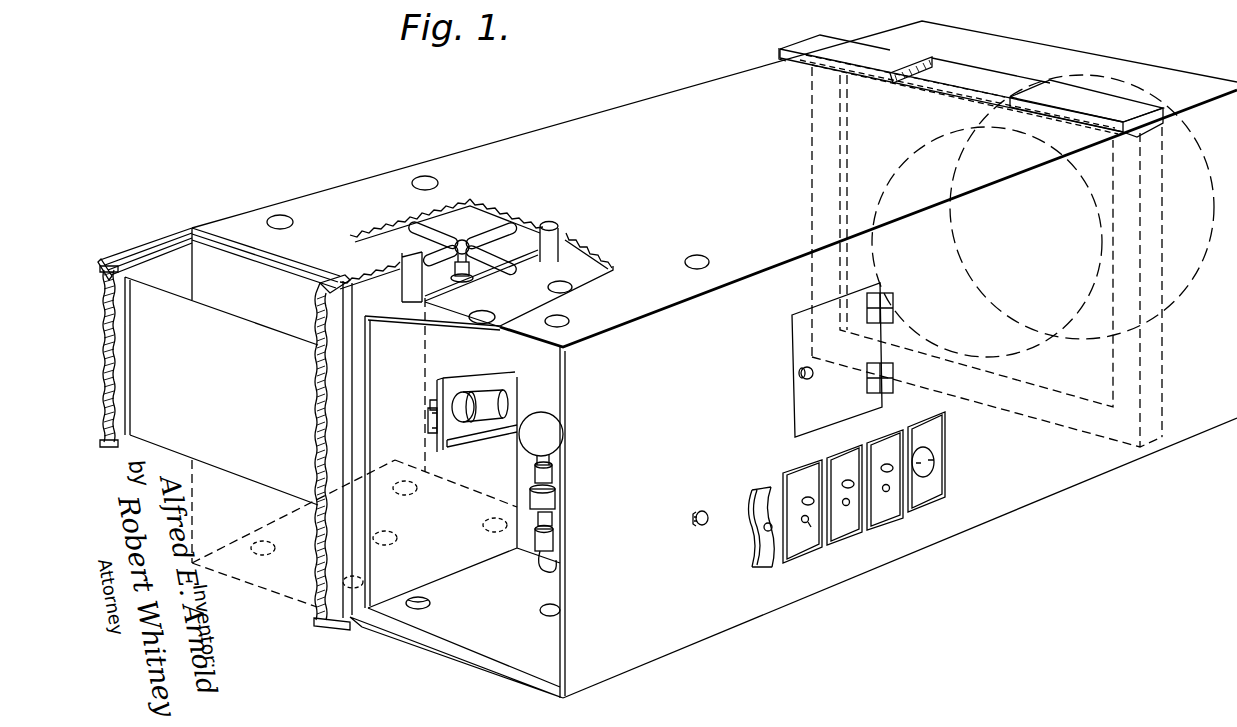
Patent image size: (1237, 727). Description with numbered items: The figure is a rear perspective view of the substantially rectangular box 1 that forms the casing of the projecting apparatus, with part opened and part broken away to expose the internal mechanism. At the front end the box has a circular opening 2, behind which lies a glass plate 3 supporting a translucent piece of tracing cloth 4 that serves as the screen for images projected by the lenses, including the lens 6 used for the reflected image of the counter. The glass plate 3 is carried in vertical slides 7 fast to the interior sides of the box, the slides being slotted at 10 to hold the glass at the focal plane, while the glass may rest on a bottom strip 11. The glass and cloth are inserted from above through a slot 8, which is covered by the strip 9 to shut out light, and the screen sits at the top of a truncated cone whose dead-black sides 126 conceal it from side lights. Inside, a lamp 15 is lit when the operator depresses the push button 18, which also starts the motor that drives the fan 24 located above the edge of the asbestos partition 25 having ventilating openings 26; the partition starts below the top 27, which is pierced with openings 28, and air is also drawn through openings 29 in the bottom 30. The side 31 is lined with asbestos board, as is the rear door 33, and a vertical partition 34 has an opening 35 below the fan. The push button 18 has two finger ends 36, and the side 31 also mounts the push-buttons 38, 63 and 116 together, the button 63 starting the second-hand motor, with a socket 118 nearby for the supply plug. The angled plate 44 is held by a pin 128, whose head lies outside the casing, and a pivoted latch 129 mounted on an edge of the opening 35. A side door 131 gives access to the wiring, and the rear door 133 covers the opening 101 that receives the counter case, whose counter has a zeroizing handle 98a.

The box 1 is at (1152, 70).
The circular opening 2 is at (1193, 206).
The glass plate 3 is at (973, 105).
The tracing cloth 4 is at (897, 75).
The lens 6 is at (478, 398).
The slides 7 is at (812, 173).
The slot 8 is at (940, 82).
The strip 9 is at (1058, 92).
The slot 10 is at (830, 68).
The bottom strip 11 is at (1015, 403).
The lamp 15 is at (520, 451).
The push button 18 is at (833, 474).
The fan 24 is at (428, 230).
The partition 25 is at (507, 288).
The ventilating openings 26 is at (469, 317).
The top 27 is at (714, 124).
The openings 28 is at (710, 255).
The openings 29 is at (393, 543).
The bottom 30 is at (450, 655).
The side 31 is at (743, 616).
The rear door 33 is at (316, 418).
The vertical partition 34 is at (384, 462).
The opening 35 is at (458, 378).
The finger ends 36 is at (847, 491).
The push button 38 is at (813, 504).
The plate 44 is at (533, 548).
The push button 63 is at (766, 530).
The zeroizing handle 98a is at (432, 430).
The opening 101 is at (205, 322).
The push button 116 is at (893, 474).
The socket 118 is at (934, 464).
The sides 126 is at (1000, 92).
The pin 128 is at (700, 511).
The pivoted latch 129 is at (477, 445).
The side door 131 is at (798, 356).
The rear door 133 is at (120, 262).